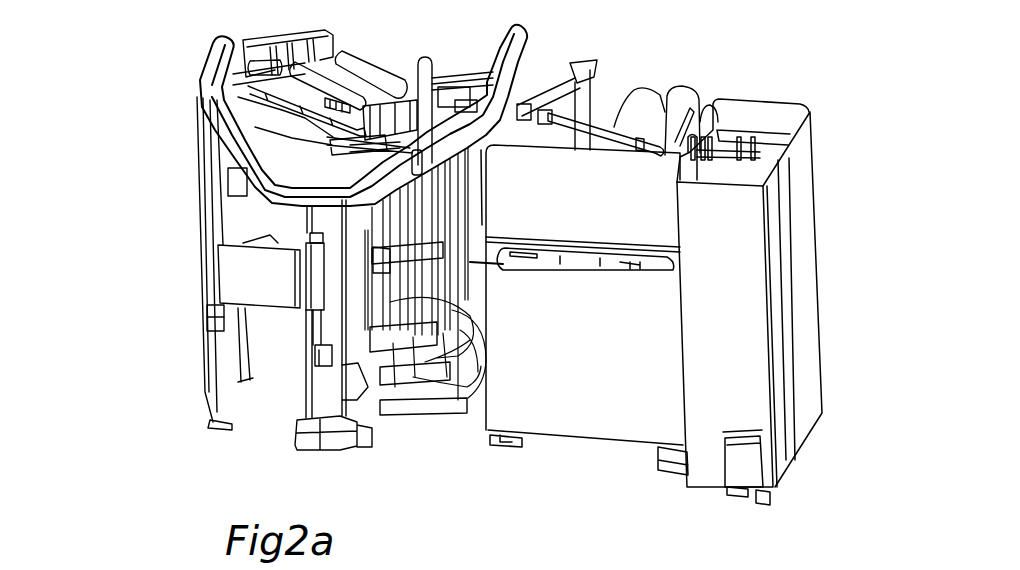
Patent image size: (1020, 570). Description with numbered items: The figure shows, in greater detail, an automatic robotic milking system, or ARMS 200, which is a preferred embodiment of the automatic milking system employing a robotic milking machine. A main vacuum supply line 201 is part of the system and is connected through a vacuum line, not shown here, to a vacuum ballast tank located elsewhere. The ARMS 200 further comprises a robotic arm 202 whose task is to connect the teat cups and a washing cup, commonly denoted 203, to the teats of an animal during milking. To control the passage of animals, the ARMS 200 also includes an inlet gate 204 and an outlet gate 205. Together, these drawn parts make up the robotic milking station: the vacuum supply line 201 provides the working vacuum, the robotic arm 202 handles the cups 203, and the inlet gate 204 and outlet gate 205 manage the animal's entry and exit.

The automatic robotic milking system (ARMS) 200 is at (95, 371).
The main vacuum supply line 201 is at (690, 158).
The robotic arm 202 is at (316, 395).
The teat cups and washing cup 203 is at (484, 392).
The inlet gate 204 is at (204, 99).
The outlet gate 205 is at (613, 126).